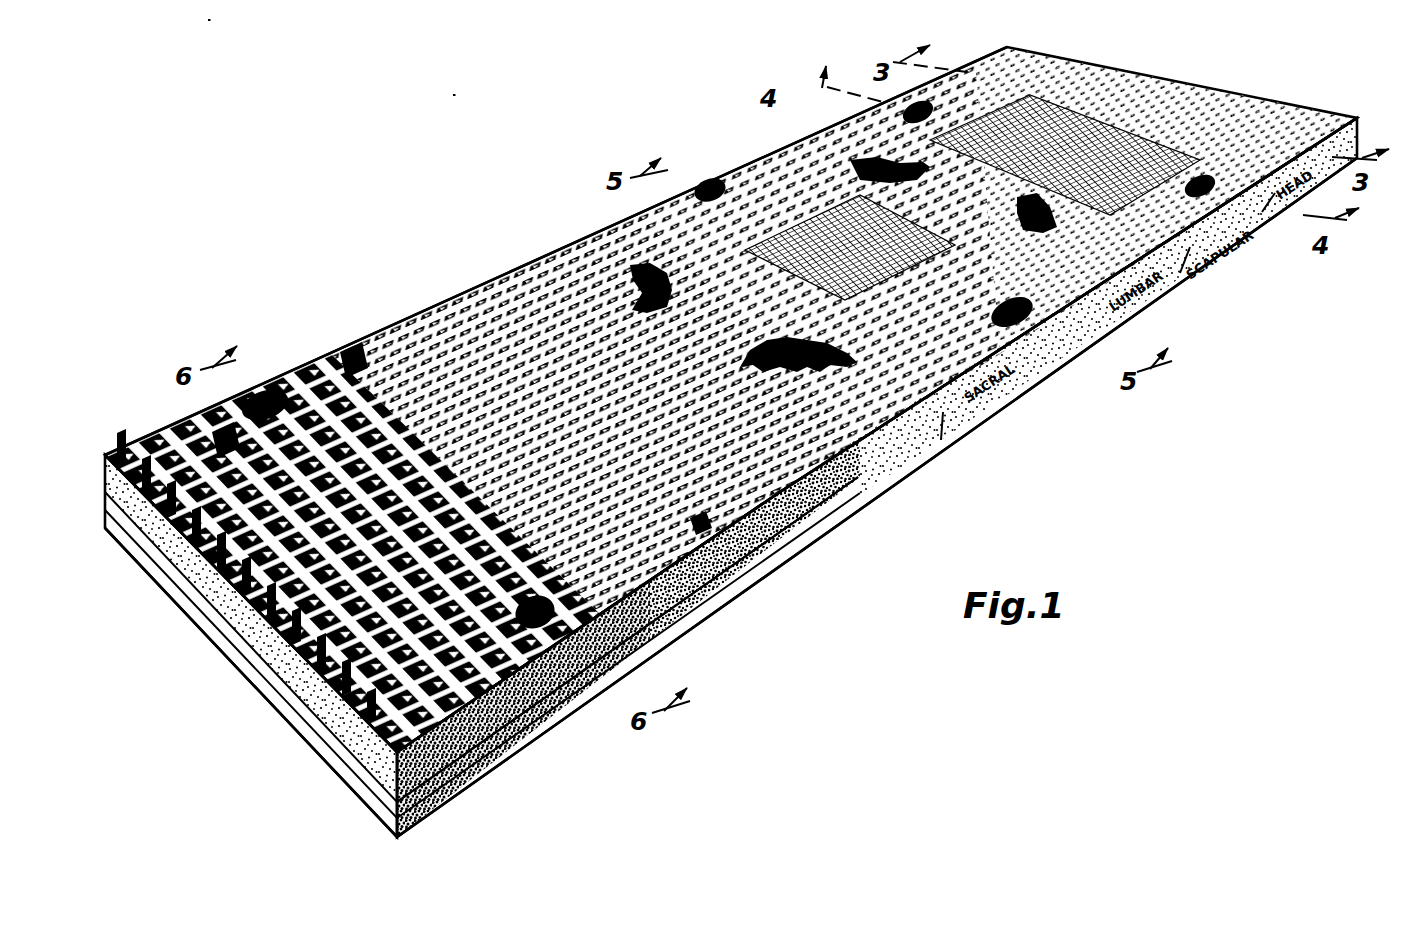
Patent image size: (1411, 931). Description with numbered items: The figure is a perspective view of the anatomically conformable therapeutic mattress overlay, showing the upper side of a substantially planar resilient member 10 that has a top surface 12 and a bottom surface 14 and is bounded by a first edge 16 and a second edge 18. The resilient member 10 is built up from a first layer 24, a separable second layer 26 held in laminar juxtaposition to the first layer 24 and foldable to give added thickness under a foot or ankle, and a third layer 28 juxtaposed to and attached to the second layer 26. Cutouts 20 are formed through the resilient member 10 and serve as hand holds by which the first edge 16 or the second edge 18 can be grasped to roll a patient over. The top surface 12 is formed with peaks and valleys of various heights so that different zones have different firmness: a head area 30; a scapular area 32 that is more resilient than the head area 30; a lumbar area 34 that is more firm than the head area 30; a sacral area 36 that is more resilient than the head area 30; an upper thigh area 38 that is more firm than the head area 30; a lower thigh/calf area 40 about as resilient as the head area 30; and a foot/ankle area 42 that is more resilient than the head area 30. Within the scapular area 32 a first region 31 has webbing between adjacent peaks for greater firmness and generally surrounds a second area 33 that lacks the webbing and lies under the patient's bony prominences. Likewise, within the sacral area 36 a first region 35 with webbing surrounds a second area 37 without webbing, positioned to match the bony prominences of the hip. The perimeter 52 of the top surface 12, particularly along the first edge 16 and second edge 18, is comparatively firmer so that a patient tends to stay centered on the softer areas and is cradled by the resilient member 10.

The resilient member 10 is at (483, 197).
The top surface 12 is at (430, 330).
The bottom surface 14 is at (714, 614).
The first edge 16 is at (980, 422).
The second edge 18 is at (352, 348).
The cutouts 20 is at (264, 396).
The first layer 24 is at (380, 768).
The second layer 26 is at (292, 700).
The third layer 28 is at (228, 645).
The head area 30 is at (1138, 104).
The first region of scapular area 31 is at (1012, 100).
The scapular area 32 is at (878, 150).
The second area of scapular area 33 is at (1002, 180).
The lumbar area 34 is at (1004, 242).
The first region of sacral area 35 is at (650, 268).
The sacral area 36 is at (822, 214).
The second area of sacral area 37 is at (850, 250).
The upper thigh area 38 is at (852, 334).
The lower thigh/calf area 40 is at (700, 524).
The foot/ankle area 42 is at (216, 432).
The perimeter 52 is at (505, 282).